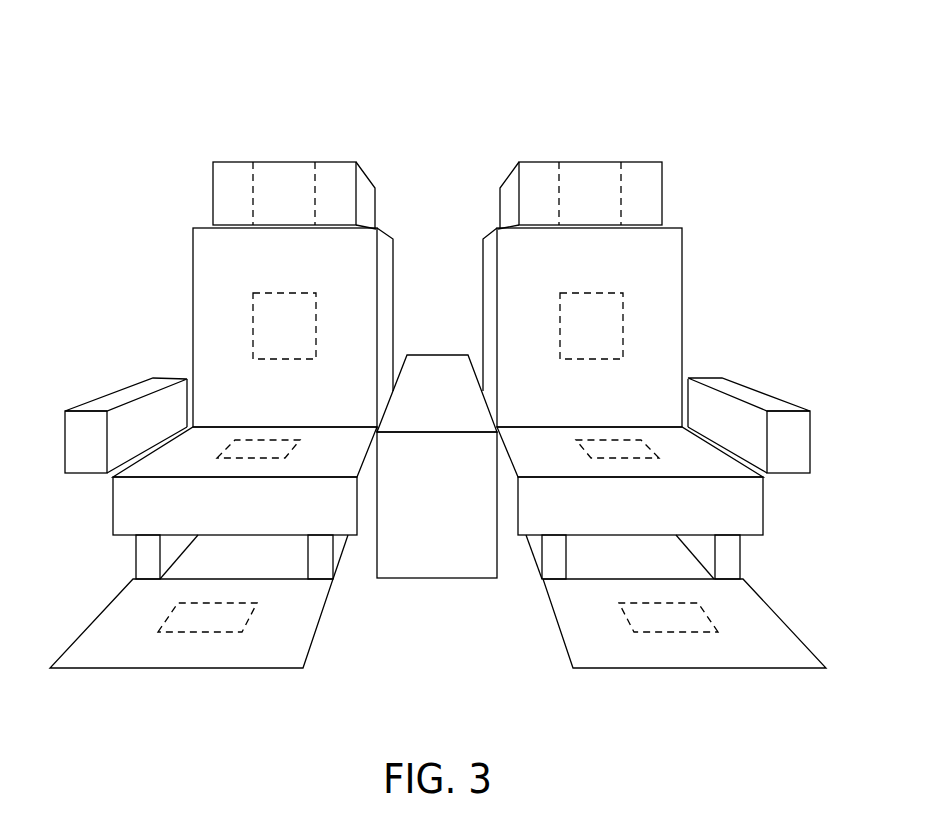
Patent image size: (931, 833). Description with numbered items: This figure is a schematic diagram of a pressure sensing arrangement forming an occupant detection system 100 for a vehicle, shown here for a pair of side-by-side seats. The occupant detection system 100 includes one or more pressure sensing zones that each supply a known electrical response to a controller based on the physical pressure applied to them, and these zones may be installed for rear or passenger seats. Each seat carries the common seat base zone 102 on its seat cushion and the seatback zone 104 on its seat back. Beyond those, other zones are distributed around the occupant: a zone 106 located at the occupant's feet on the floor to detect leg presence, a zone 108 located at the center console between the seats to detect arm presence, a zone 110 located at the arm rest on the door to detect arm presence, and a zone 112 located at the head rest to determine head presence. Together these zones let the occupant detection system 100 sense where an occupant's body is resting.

The occupant detection system 100 is at (240, 62).
The seat base zone 102 is at (260, 453).
The seatback zone 104 is at (265, 329).
The zone located at the occupant's feet 106 is at (212, 622).
The zone located at the center console 108 is at (427, 367).
The zone located at the arm rest on the door 110 is at (128, 395).
The zone located at the head rest 112 is at (277, 180).